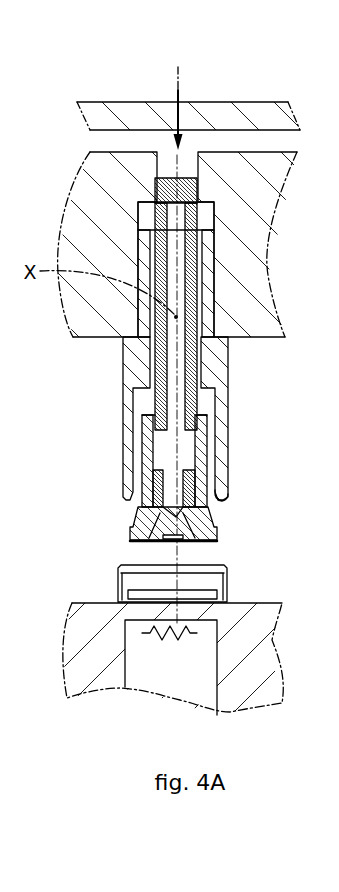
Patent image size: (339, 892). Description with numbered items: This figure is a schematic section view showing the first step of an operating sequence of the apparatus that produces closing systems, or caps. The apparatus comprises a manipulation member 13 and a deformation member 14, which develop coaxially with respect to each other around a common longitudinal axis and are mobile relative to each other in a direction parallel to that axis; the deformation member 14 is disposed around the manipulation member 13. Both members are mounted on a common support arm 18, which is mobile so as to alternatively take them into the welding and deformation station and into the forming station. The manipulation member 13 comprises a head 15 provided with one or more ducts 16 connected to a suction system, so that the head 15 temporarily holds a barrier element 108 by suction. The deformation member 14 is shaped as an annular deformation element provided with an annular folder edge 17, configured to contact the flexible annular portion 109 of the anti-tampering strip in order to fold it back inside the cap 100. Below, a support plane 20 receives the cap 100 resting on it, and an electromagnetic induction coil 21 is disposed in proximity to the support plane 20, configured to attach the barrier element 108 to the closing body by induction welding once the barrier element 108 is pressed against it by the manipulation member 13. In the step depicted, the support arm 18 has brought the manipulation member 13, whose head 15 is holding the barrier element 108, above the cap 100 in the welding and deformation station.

The manipulation member 13 is at (147, 455).
The deformation member 14 is at (222, 432).
The head 15 is at (203, 525).
The ducts 16 is at (155, 527).
The folder edge 17 is at (221, 501).
The support arm 18 is at (243, 170).
The support plane 20 is at (273, 603).
The electromagnetic induction coil 21 is at (158, 642).
The cap 100 is at (84, 584).
The barrier element 108 is at (148, 540).
The flexible annular portion 109 is at (223, 567).